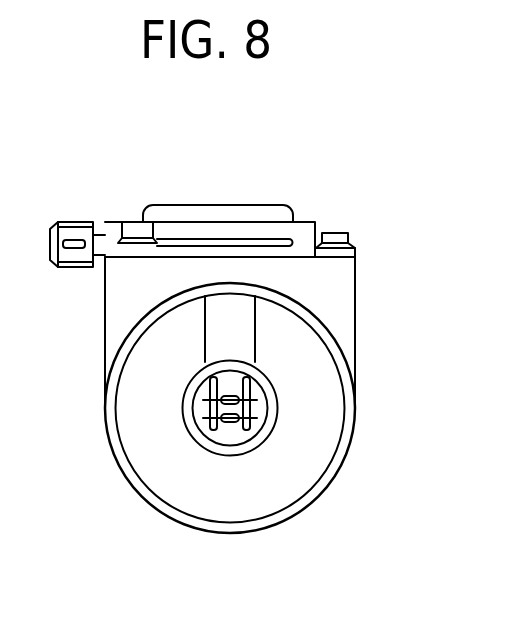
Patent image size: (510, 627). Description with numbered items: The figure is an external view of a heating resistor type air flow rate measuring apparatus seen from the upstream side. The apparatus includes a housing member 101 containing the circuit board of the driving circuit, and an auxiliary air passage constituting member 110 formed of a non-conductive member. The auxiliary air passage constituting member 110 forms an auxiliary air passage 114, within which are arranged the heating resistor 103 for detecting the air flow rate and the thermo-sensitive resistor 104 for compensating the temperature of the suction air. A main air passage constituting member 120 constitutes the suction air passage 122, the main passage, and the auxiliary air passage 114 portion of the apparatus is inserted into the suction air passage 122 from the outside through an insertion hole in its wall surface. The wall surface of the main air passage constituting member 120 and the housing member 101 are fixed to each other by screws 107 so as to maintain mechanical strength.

The housing member 101 is at (227, 207).
The heating resistor 103 is at (250, 436).
The thermo-sensitive resistor 104 is at (229, 392).
The screws 107 is at (132, 222).
The auxiliary air passage constituting member 110 is at (237, 457).
The auxiliary air passage 114 is at (232, 430).
The main air passage constituting member 120 is at (290, 302).
The suction air passage 122 is at (277, 480).